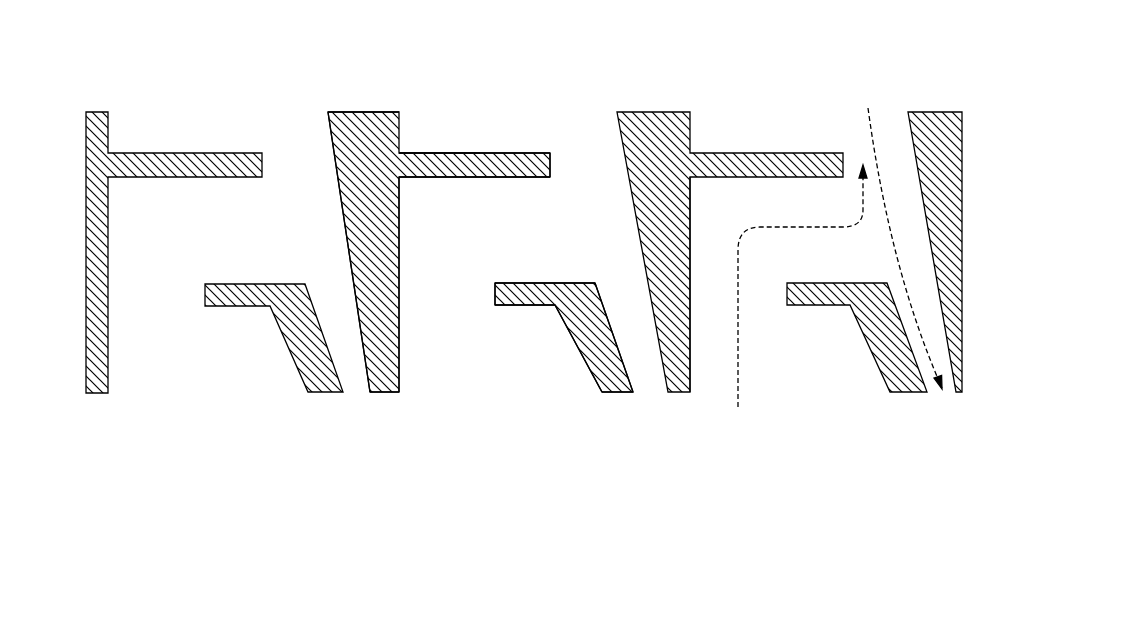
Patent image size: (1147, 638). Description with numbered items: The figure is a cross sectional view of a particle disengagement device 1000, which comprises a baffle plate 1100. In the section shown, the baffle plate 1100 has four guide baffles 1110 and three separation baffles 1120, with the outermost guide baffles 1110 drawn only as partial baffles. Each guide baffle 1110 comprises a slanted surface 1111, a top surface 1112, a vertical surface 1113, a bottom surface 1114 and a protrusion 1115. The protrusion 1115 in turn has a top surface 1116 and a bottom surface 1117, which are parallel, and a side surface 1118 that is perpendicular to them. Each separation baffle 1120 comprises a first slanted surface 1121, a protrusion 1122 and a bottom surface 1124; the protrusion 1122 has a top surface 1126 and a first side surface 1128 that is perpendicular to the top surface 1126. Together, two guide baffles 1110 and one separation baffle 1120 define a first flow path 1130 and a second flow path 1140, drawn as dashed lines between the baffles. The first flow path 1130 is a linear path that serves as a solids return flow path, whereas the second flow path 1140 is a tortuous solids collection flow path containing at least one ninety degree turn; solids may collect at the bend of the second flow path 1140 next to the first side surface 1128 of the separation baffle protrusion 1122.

The particle disengagement device 1000 is at (945, 52).
The baffle plate 1100 is at (893, 457).
The guide baffle 1110 is at (110, 133).
The slanted surface 1111 is at (331, 142).
The top surface 1112 is at (366, 111).
The vertical surface 1113 is at (401, 238).
The bottom surface 1114 is at (386, 393).
The protrusion 1115 is at (517, 153).
The top surface 1116 is at (450, 153).
The bottom surface 1117 is at (522, 178).
The side surface 1118 is at (551, 167).
The separation baffle 1120 is at (327, 393).
The first slanted surface 1121 is at (585, 363).
The protrusion 1122 is at (522, 283).
The bottom surface 1124 is at (627, 393).
The top surface 1126 is at (562, 283).
The first side surface 1128 is at (613, 283).
The first flow path 1130 is at (872, 140).
The second flow path 1140 is at (740, 352).